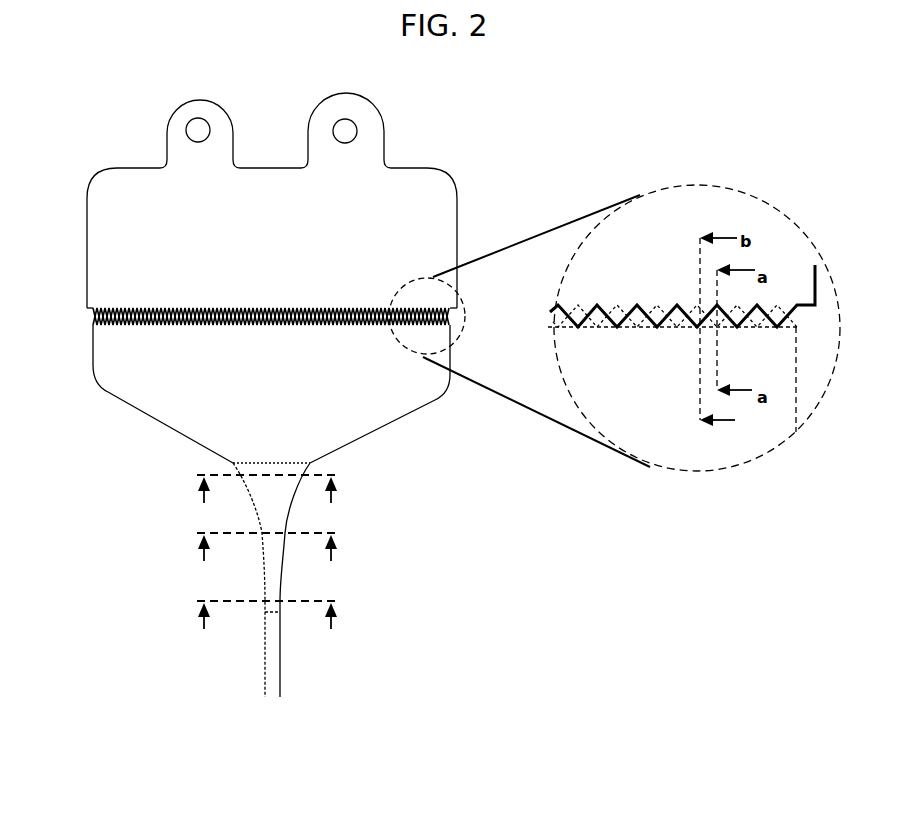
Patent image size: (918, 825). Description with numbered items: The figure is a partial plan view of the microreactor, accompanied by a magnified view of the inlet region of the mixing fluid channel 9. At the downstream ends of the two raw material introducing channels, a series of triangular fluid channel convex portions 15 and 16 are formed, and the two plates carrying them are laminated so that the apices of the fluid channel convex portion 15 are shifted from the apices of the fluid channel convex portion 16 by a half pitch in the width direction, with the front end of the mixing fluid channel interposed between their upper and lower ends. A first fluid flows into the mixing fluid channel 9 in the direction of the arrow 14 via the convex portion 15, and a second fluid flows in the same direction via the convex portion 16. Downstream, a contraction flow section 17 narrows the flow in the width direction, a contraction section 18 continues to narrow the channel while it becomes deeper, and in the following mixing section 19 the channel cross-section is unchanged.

The mixing fluid channel 9 is at (82, 330).
The arrow 14 is at (657, 380).
The fluid channel convex portion 15 is at (600, 342).
The fluid channel convex portion 16 is at (575, 337).
The contraction flow section 17 is at (342, 415).
The contraction section 18 is at (355, 466).
The mixing section 19 is at (355, 617).